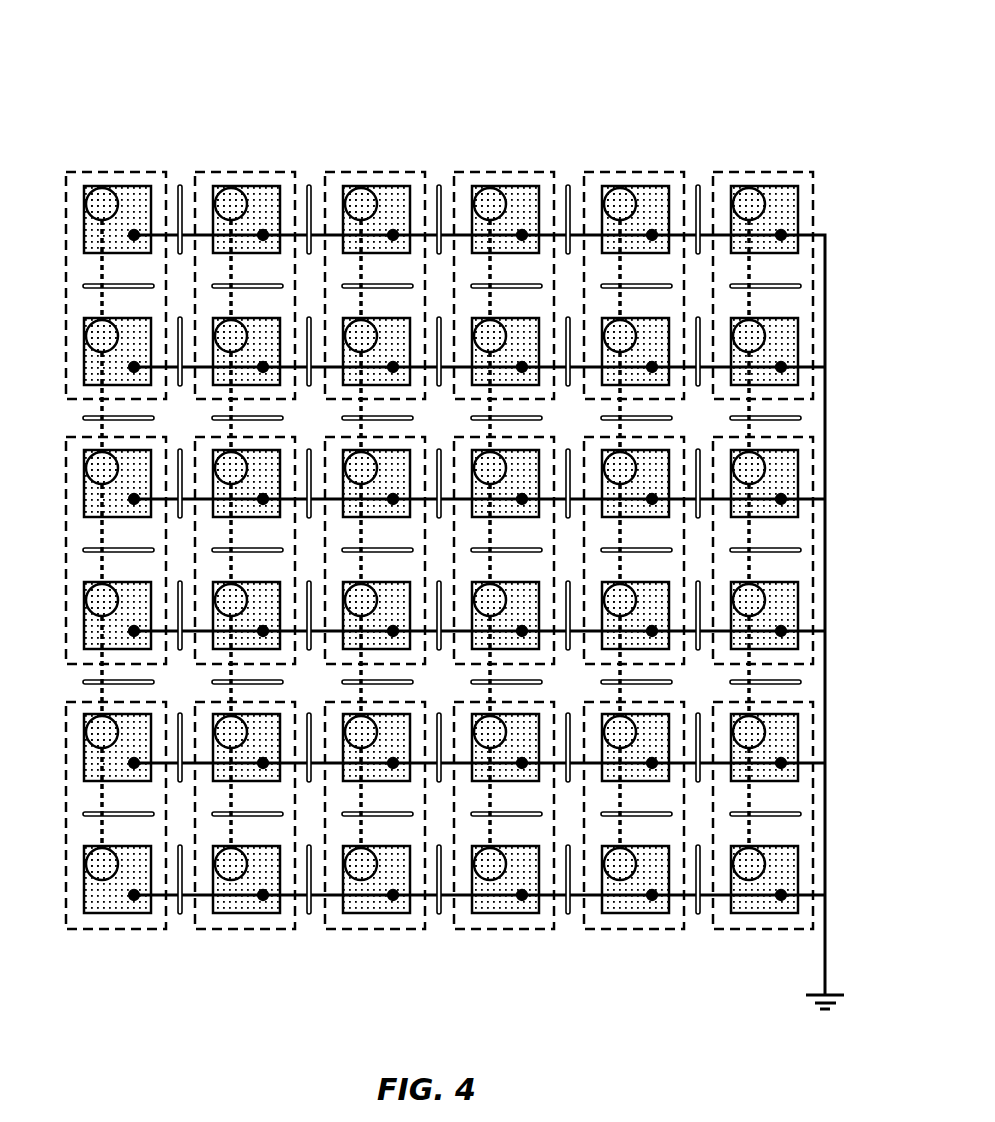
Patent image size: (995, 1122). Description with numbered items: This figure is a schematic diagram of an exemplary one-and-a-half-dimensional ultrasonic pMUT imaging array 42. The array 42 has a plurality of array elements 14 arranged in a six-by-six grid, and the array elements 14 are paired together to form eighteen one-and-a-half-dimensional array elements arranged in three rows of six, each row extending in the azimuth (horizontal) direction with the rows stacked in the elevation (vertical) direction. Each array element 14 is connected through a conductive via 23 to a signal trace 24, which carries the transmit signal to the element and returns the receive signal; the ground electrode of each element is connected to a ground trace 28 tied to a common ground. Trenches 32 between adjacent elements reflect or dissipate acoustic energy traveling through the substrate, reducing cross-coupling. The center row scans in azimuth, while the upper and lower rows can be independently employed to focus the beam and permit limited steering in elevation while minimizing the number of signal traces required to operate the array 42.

The 1.5D ultrasonic pMUT imaging array 42 is at (150, 54).
The conductive via 23 is at (90, 221).
The array element 14 is at (84, 244).
The signal trace 24 is at (100, 270).
The ground trace 28 is at (177, 368).
The trench 32 is at (88, 551).